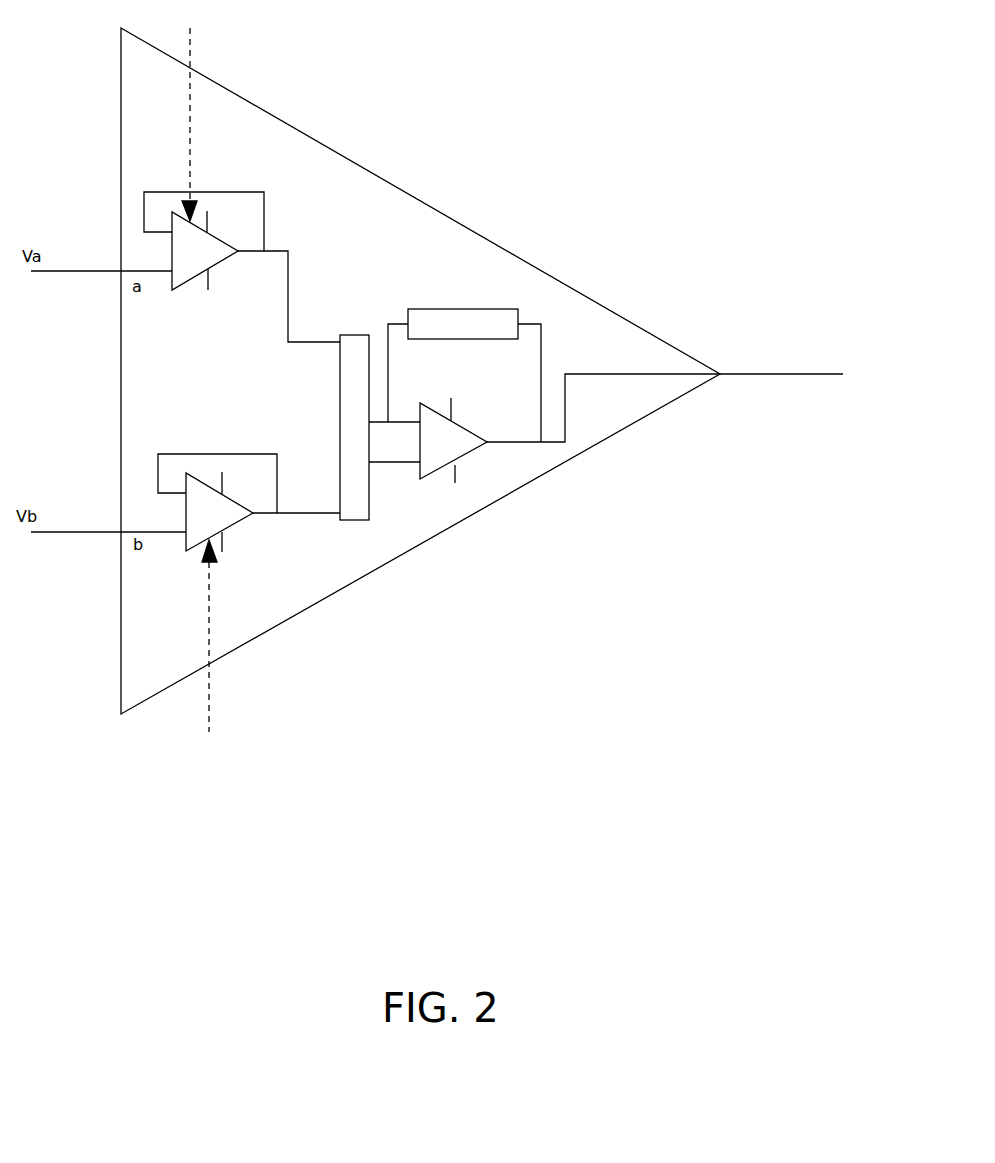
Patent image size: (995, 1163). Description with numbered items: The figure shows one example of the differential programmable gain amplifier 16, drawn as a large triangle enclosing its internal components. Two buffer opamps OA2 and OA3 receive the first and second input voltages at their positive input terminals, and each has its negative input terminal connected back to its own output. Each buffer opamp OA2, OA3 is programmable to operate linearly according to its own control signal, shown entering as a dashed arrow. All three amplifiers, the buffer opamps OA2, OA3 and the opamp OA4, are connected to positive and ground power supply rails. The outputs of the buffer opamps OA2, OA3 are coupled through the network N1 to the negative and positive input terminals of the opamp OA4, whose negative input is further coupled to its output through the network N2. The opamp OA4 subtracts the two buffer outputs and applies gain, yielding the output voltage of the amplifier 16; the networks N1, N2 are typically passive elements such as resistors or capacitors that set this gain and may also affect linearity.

The DPGA 16 is at (669, 51).
The buffer opamp OA2 is at (248, 174).
The buffer opamp OA3 is at (249, 607).
The opamp OA4 is at (606, 420).
The network N1 is at (354, 415).
The network N2 is at (464, 366).